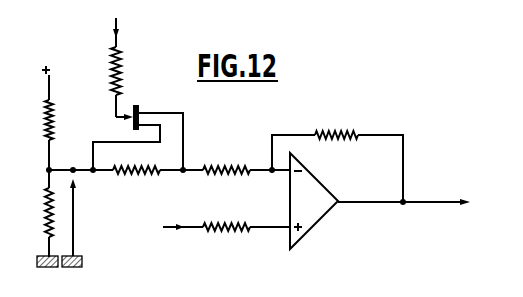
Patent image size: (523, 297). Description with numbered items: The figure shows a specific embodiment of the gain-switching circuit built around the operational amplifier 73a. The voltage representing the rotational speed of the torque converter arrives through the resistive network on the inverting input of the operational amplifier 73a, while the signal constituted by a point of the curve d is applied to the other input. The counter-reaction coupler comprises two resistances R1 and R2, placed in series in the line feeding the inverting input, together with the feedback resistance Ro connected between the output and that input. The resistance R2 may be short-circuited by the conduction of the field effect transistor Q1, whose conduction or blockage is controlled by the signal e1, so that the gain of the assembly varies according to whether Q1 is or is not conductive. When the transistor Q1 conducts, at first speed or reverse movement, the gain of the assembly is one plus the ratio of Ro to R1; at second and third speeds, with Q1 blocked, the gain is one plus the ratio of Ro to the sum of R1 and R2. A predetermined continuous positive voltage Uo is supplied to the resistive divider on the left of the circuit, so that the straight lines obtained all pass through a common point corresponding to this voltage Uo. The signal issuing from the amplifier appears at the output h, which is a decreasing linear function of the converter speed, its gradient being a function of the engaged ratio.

The operational amplifier 73a is at (308, 203).
The resistance R1 is at (226, 161).
The resistance R2 is at (136, 161).
The resistance Ro is at (337, 157).
The field effect transistor Q1 is at (138, 127).
The signal e1 is at (126, 67).
The voltage Uo is at (84, 217).
The curve d signal d is at (226, 219).
The voltage h is at (404, 194).